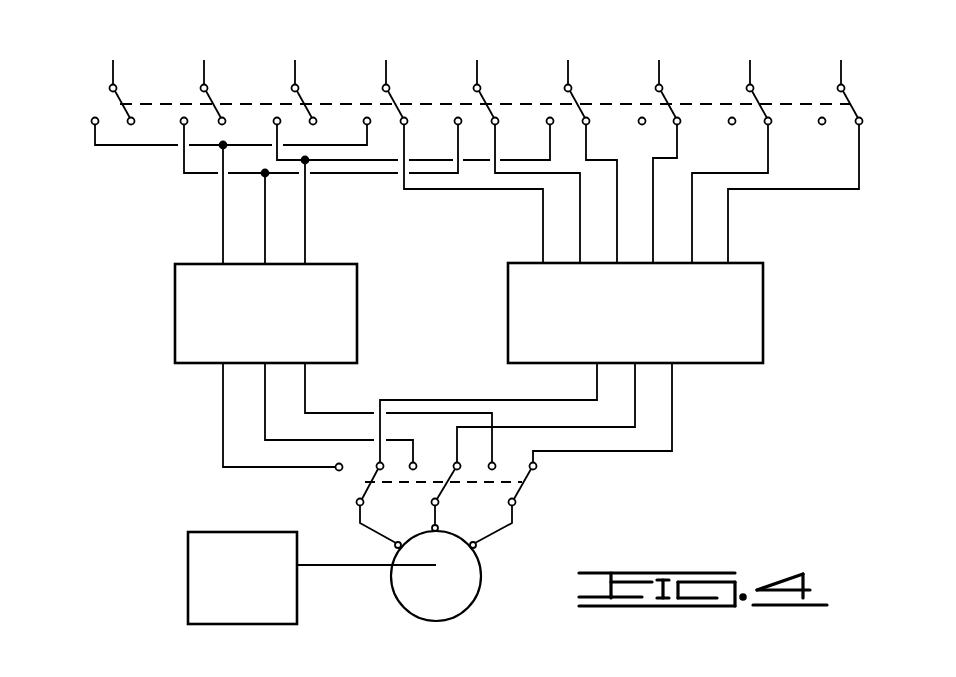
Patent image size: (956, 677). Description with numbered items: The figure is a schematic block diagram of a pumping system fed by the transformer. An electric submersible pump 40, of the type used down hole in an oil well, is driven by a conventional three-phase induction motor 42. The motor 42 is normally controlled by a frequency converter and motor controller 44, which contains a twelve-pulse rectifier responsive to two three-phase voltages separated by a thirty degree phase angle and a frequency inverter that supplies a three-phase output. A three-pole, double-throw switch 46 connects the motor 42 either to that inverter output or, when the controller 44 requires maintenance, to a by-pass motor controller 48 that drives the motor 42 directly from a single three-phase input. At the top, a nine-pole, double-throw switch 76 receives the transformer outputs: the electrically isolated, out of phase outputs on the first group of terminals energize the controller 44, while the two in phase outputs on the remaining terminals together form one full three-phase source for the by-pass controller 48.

The nine-pole, double-throw switch 76 is at (100, 104).
The by-pass motor controller 48 is at (357, 319).
The frequency converter and motor controller 44 is at (763, 314).
The three-pole, double-throw switch 46 is at (535, 485).
The three-phase induction motor 42 is at (458, 617).
The electric submersible pump 40 is at (188, 584).